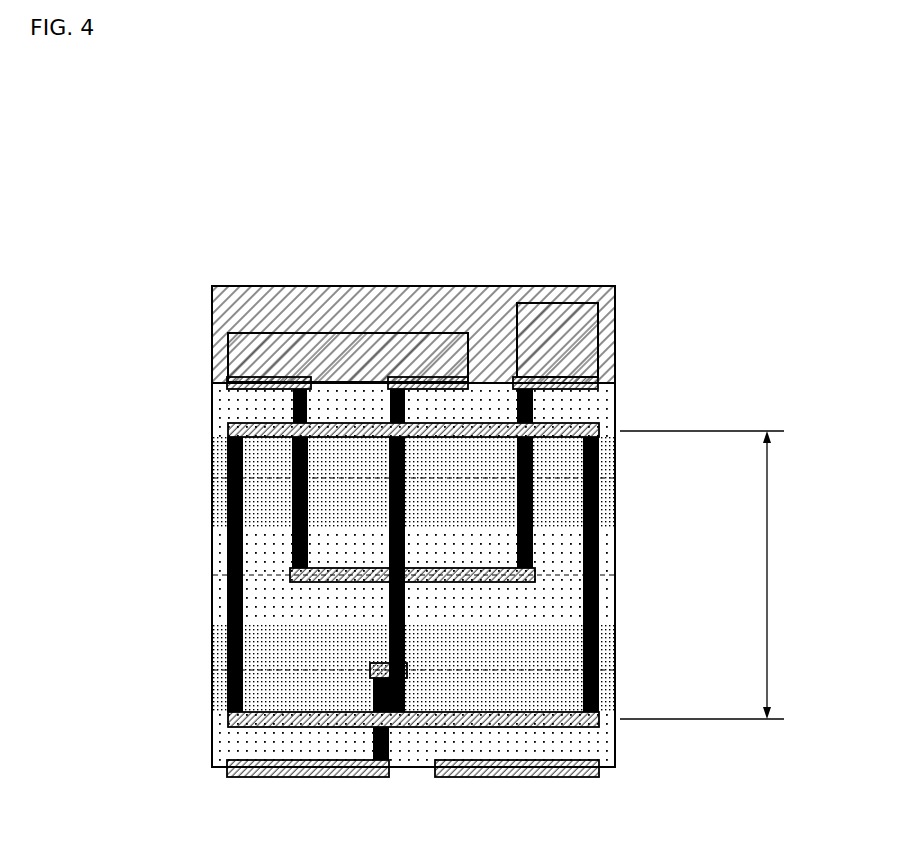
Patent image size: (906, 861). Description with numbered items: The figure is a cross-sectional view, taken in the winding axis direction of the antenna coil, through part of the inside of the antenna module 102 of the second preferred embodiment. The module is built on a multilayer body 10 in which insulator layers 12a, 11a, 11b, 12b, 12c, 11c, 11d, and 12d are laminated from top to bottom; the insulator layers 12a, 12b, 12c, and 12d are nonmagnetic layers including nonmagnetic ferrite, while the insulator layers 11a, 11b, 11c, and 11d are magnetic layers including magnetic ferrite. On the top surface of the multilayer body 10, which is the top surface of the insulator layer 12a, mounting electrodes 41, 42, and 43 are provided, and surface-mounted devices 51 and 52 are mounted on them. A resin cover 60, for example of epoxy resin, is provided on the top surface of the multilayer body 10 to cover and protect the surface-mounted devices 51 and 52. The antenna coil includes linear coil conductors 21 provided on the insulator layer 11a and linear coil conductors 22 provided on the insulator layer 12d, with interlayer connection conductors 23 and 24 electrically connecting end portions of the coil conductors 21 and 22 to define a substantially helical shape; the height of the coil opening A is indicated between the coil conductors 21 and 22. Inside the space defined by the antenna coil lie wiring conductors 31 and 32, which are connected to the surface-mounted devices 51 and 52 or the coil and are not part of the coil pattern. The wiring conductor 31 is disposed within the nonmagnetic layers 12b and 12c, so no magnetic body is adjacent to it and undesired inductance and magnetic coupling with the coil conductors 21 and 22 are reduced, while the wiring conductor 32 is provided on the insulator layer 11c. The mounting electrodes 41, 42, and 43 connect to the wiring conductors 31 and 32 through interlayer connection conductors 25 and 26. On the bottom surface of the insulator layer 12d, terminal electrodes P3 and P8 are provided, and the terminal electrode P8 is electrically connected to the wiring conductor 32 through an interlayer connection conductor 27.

The antenna module 102 is at (702, 193).
The multilayer body 10 is at (202, 380).
The resin cover 60 is at (312, 305).
The surface-mounted device 51 is at (351, 350).
The surface-mounted device 52 is at (555, 320).
The mounting electrode 41 is at (262, 378).
The mounting electrode 42 is at (428, 362).
The mounting electrode 43 is at (573, 378).
The coil conductor 21 is at (488, 430).
The coil conductor 22 is at (283, 722).
The interlayer connection conductor 23 is at (606, 585).
The interlayer connection conductor 24 is at (238, 460).
The interlayer connection conductor 25 is at (515, 493).
The interlayer connection conductor 26 is at (388, 603).
The interlayer connection conductor 27 is at (372, 695).
The wiring conductor 31 is at (340, 567).
The wiring conductor 32 is at (368, 667).
The insulator layer 11a is at (610, 455).
The insulator layer 11b is at (610, 503).
The insulator layer 11c is at (610, 648).
The insulator layer 11d is at (610, 697).
The insulator layer 12a is at (610, 404).
The insulator layer 12b is at (610, 546).
The insulator layer 12c is at (610, 607).
The insulator layer 12d is at (610, 745).
The terminal electrode P8 is at (309, 778).
The terminal electrode P3 is at (519, 778).
The coil opening A is at (706, 575).